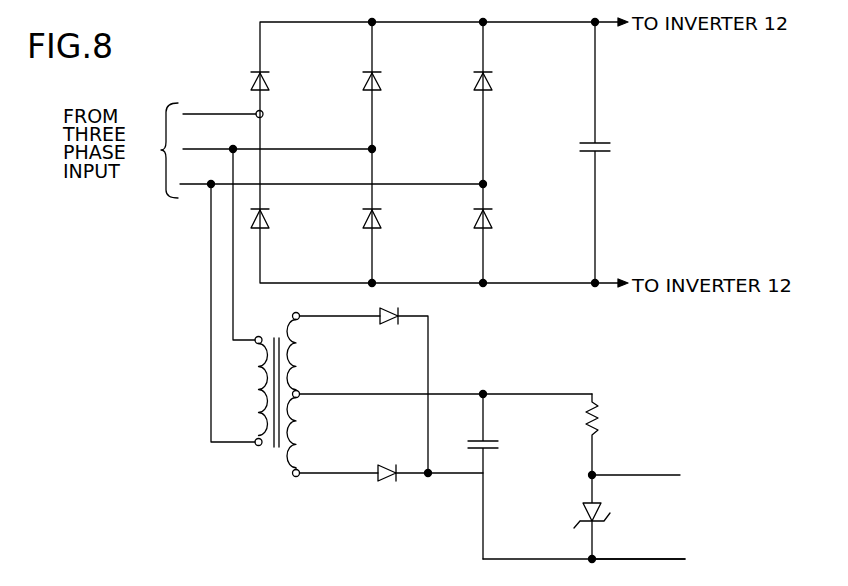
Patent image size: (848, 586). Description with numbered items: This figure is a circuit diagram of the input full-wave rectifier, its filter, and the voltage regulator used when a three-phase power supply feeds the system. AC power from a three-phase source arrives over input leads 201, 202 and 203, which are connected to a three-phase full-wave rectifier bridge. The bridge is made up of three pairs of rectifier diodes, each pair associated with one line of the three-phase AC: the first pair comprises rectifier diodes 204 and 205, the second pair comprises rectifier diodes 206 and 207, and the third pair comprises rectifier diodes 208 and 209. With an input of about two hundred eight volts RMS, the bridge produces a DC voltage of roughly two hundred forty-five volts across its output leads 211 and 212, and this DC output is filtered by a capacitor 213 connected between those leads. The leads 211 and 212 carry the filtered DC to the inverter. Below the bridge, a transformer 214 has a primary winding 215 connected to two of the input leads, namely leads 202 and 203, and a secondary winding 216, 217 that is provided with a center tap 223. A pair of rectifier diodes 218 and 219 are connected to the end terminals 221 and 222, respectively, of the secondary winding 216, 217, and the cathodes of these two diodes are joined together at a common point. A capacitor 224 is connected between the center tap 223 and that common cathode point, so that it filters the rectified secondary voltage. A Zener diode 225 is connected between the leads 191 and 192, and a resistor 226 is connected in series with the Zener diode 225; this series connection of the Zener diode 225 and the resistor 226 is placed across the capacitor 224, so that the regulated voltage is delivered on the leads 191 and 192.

The lead 191 is at (651, 559).
The lead 192 is at (646, 475).
The input lead 201 is at (228, 114).
The input lead 202 is at (193, 128).
The input lead 203 is at (193, 164).
The rectifier diode 204 is at (269, 84).
The rectifier diode 205 is at (269, 221).
The rectifier diode 206 is at (381, 84).
The rectifier diode 207 is at (381, 221).
The rectifier diode 208 is at (492, 84).
The rectifier diode 209 is at (492, 221).
The lead 211 is at (604, 28).
The lead 212 is at (606, 281).
The capacitor 213 is at (601, 142).
The transformer 214 is at (276, 336).
The primary winding 215 is at (263, 378).
The secondary winding 216 is at (294, 355).
The secondary winding 217 is at (293, 424).
The rectifier diode 218 is at (388, 310).
The rectifier diode 219 is at (387, 464).
The end terminal 221 is at (287, 296).
The end terminal 222 is at (296, 477).
The center tap 223 is at (299, 392).
The capacitor 224 is at (494, 440).
The Zener diode 225 is at (606, 493).
The resistor 226 is at (597, 431).